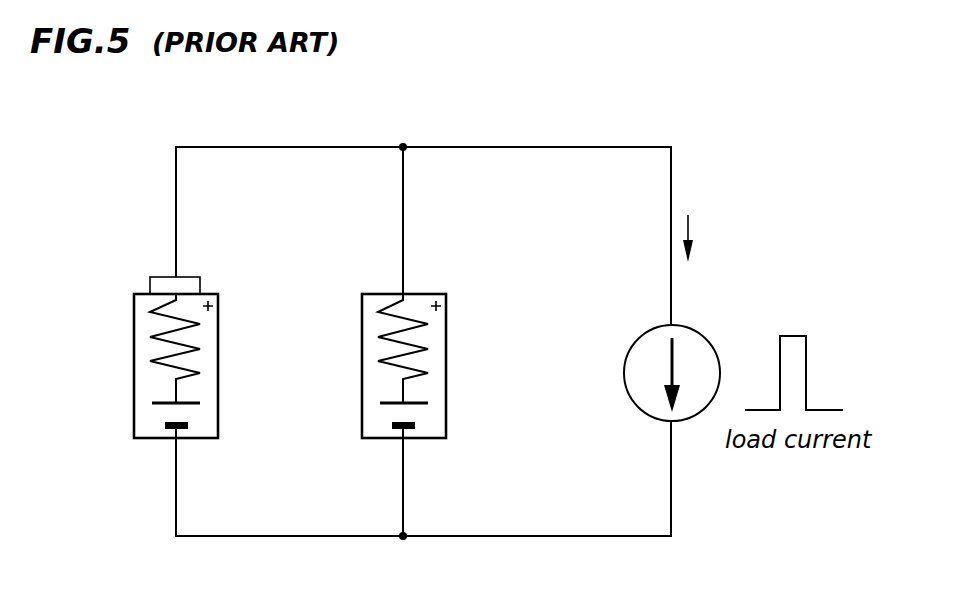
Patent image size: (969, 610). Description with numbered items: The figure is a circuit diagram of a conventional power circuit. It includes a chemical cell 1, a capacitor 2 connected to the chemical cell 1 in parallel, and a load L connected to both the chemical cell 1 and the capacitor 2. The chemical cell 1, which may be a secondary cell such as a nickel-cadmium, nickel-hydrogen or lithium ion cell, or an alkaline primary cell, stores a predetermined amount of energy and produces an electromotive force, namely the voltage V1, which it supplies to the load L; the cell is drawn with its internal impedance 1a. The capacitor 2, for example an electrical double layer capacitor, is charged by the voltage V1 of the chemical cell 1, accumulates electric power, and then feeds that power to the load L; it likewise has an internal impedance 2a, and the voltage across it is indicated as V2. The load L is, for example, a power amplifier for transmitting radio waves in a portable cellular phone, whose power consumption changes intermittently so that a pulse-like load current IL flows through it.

The chemical cell 1 is at (196, 425).
The internal impedance 1a is at (190, 342).
The capacitor 2 is at (492, 371).
The internal impedance 2a is at (418, 340).
The load L is at (697, 331).
The load current IL is at (688, 222).
The voltage V1 is at (288, 147).
The capacitor voltage V2 is at (403, 240).